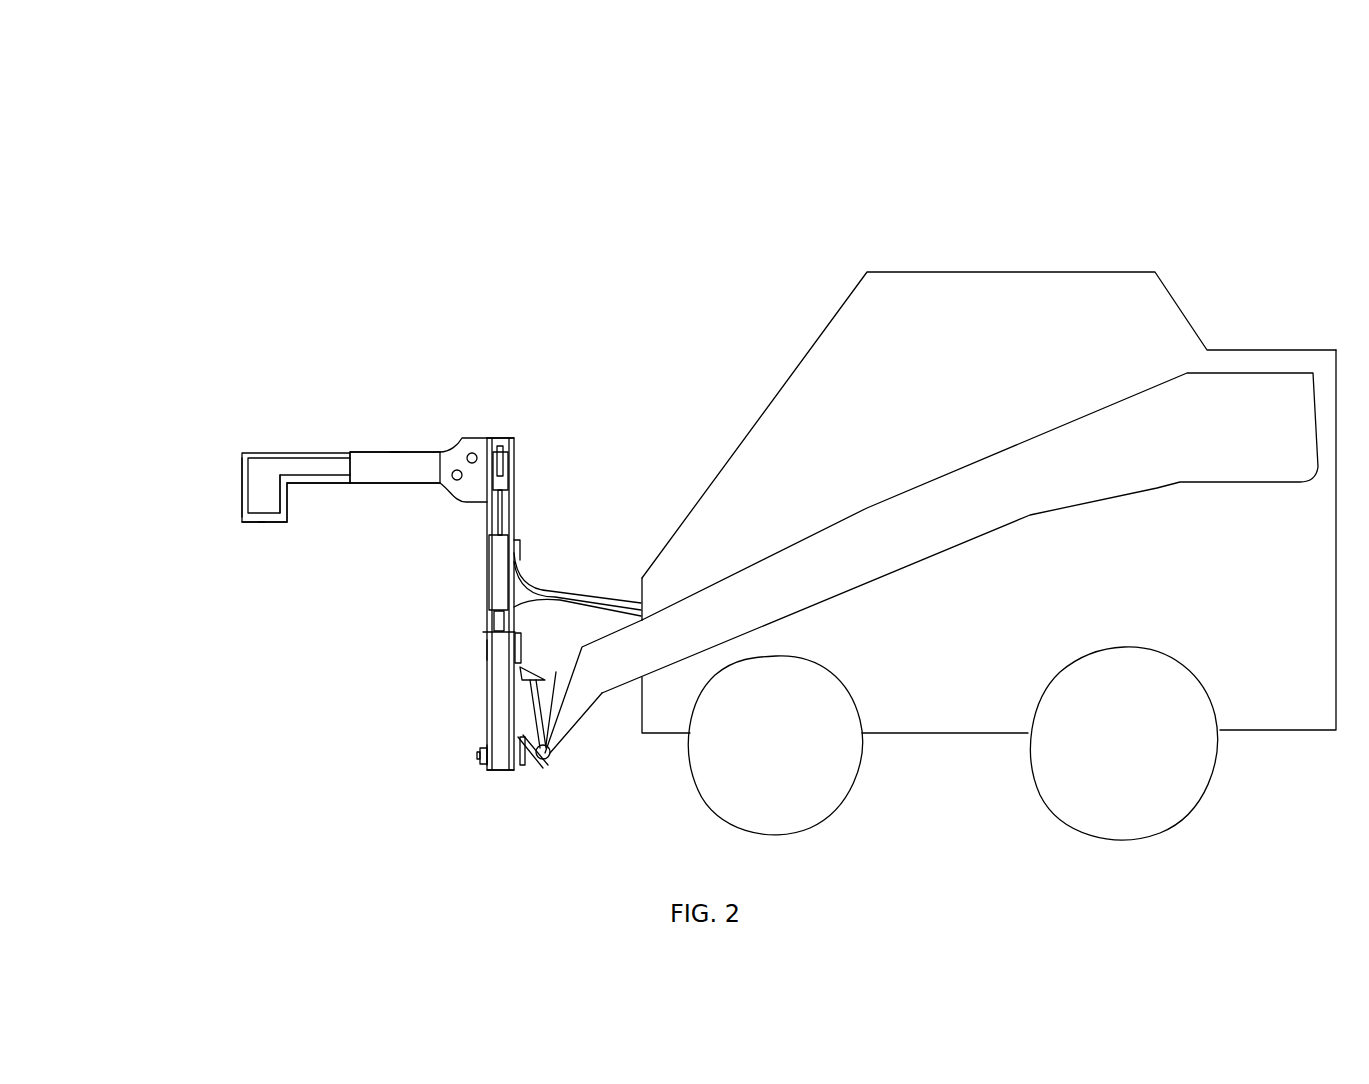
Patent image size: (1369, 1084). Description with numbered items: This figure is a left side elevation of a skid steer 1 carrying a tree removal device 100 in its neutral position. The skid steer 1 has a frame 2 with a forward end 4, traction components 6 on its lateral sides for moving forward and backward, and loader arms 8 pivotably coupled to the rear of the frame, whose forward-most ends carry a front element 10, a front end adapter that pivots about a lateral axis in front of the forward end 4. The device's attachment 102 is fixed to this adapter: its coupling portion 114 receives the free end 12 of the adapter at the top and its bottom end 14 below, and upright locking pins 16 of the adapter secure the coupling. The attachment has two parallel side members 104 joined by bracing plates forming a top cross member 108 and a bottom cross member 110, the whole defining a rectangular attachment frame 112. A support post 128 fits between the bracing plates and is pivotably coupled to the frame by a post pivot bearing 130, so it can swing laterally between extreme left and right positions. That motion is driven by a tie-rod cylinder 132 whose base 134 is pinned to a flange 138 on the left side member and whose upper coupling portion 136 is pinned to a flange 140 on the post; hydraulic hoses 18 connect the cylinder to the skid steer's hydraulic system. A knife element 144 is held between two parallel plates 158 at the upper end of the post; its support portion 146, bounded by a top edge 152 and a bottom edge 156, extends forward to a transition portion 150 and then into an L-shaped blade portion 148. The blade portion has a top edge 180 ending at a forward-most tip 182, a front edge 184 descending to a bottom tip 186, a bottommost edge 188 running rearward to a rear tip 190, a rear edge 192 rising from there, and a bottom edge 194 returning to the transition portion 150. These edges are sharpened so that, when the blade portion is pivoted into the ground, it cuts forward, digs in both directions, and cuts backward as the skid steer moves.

The skid steer 1 is at (1228, 145).
The frame 2 is at (1122, 272).
The forward end 4 is at (672, 787).
The traction components 6 is at (853, 797).
The loader arms 8 is at (1250, 405).
The front element 10 is at (592, 785).
The free end 12 is at (552, 660).
The bottom end 14 is at (553, 771).
The locking pins 16 is at (525, 773).
The hydraulic hoses 18 is at (620, 576).
The tree removal device 100 is at (290, 112).
The attachment 102 is at (258, 700).
The side members 104 is at (492, 712).
The top cross member 108 is at (355, 650).
The bottom cross member 110 is at (358, 755).
The attachment frame 112 is at (478, 790).
The coupling portion 114 is at (538, 628).
The support post 128 is at (517, 445).
The post pivot bearing 130 is at (478, 758).
The tie-rod cylinder 132 is at (540, 546).
The base 134 is at (488, 622).
The upper coupling portion 136 is at (513, 482).
The flange 138 is at (488, 628).
The flange 140 is at (466, 437).
The knife element 144 is at (303, 193).
The support portion 146 is at (405, 330).
The blade portion 148 is at (270, 335).
The transition portion 150 is at (350, 426).
The top edge 152 is at (397, 450).
The bottom edge 156 is at (395, 488).
The parallel plates 158 is at (440, 448).
The top edge 180 is at (278, 450).
The forward-most tip 182 is at (235, 448).
The front edge 184 is at (242, 487).
The bottom tip 186 is at (240, 527).
The bottommost edge 188 is at (265, 523).
The rear tip 190 is at (292, 528).
The rear edge 192 is at (288, 500).
The bottom edge 194 is at (330, 485).